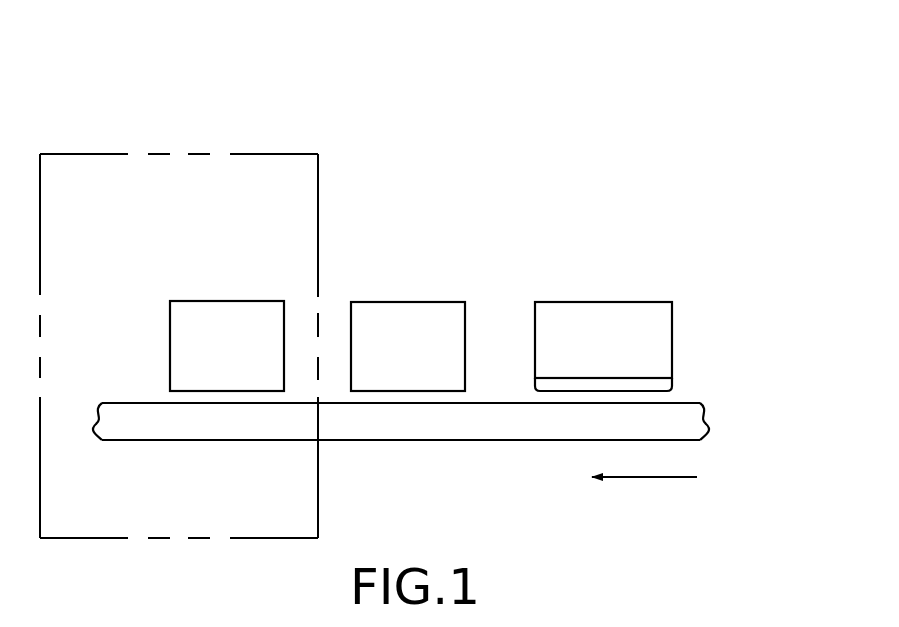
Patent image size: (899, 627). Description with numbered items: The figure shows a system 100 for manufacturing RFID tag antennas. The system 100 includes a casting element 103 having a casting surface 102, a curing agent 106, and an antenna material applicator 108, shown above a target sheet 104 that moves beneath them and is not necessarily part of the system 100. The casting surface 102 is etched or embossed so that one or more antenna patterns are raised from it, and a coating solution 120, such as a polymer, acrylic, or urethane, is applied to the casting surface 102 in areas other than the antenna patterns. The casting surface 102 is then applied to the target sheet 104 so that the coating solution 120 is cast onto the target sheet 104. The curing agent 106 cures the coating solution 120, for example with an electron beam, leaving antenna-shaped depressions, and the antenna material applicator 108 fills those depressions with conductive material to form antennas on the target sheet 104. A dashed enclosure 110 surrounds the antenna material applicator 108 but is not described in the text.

The system 100 is at (765, 172).
The processing station enclosure 110 is at (72, 154).
The target sheet 104 is at (670, 425).
The antenna material applicator 108 is at (223, 301).
The curing agent 106 is at (410, 302).
The casting element 103 is at (603, 302).
The casting surface 102 is at (680, 380).
The coating solution 120 is at (567, 394).